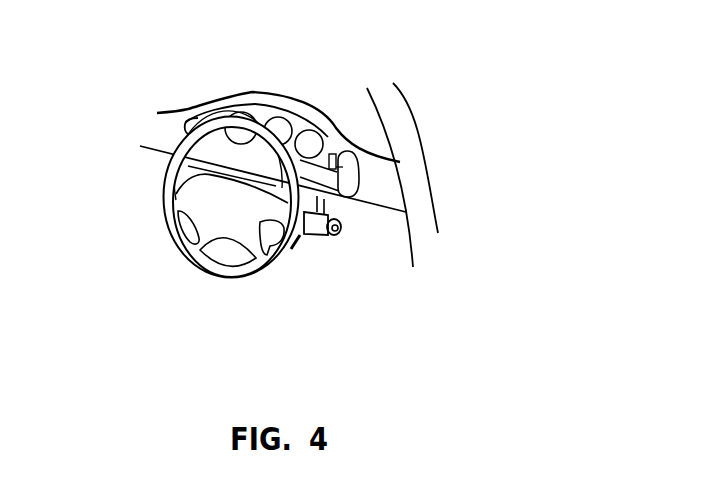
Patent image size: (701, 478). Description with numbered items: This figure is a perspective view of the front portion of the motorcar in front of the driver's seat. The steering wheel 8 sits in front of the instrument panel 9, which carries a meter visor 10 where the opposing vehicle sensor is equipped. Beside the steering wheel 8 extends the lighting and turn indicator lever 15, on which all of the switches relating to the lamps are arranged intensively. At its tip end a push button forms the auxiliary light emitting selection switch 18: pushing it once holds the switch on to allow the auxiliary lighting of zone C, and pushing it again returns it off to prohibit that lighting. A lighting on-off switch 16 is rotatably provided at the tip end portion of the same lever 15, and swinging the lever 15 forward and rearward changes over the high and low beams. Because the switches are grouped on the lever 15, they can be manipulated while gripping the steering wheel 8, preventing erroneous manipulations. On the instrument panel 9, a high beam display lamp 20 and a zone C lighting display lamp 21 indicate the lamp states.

The steering wheel 8 is at (164, 187).
The instrument panel 9 is at (183, 112).
The meter visor 10 is at (273, 92).
The lighting and turn indicator lever 15 is at (300, 255).
The lighting on-off switch 16 is at (307, 236).
The auxiliary light emitting selection switch 18 is at (341, 234).
The high beam display lamp 20 is at (332, 154).
The zone C lighting display lamp 21 is at (349, 198).